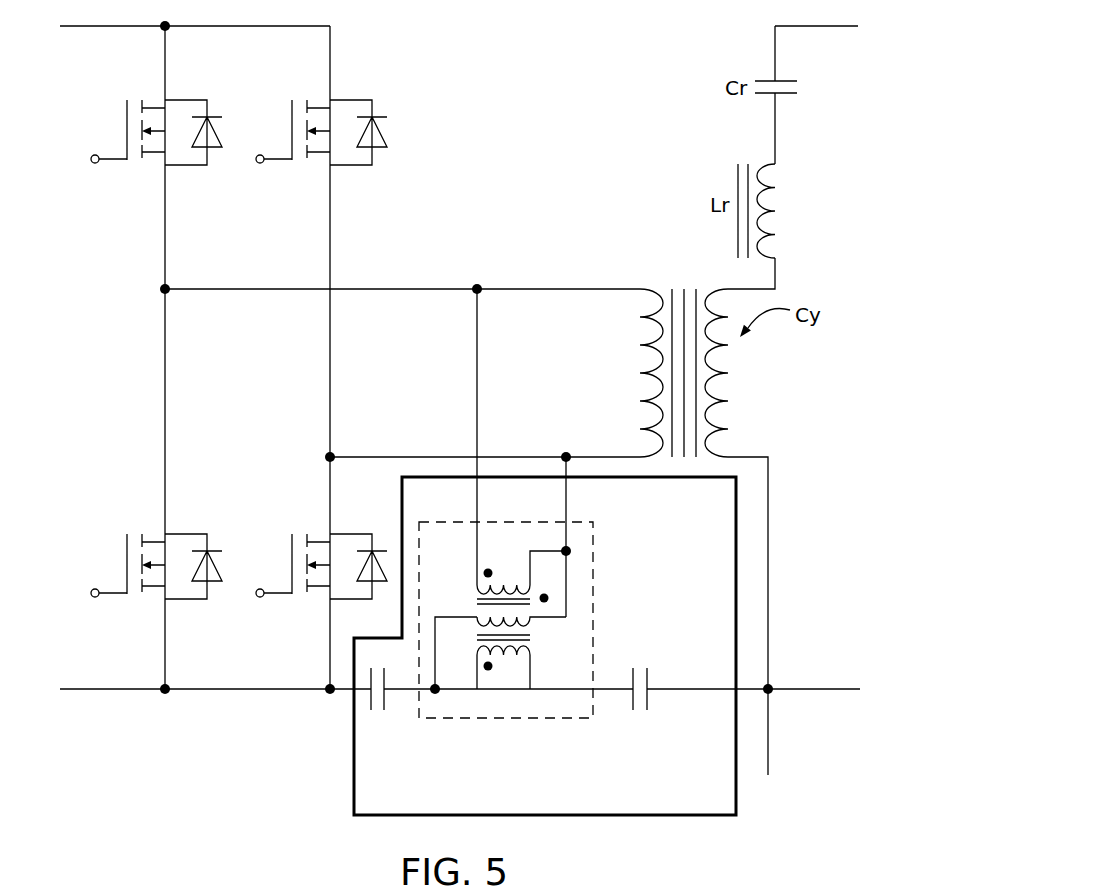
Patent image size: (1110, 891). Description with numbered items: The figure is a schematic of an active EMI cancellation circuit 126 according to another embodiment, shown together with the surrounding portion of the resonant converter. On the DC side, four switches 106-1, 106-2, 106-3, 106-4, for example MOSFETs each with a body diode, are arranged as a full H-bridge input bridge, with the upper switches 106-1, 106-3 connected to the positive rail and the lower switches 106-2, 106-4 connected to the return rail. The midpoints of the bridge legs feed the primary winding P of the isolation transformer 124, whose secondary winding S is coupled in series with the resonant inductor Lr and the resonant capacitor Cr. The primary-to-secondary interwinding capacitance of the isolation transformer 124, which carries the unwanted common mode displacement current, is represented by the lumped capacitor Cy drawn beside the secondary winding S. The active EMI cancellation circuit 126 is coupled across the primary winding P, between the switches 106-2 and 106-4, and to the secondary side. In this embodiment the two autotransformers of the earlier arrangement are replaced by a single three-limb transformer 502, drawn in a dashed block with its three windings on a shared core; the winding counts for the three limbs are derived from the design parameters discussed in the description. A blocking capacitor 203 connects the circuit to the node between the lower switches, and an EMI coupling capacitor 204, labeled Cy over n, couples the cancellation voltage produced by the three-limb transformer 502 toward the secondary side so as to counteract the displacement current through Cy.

The switch 106-1 is at (156, 115).
The switch 106-2 is at (156, 550).
The switch 106-3 is at (321, 115).
The switch 106-4 is at (321, 550).
The isolation transformer 124 is at (662, 272).
The active EMI cancellation circuit 126 is at (354, 788).
The blocking capacitor 203 is at (386, 698).
The EMI coupling capacitor 204 is at (648, 698).
The 3-limb transformer 502 is at (595, 566).